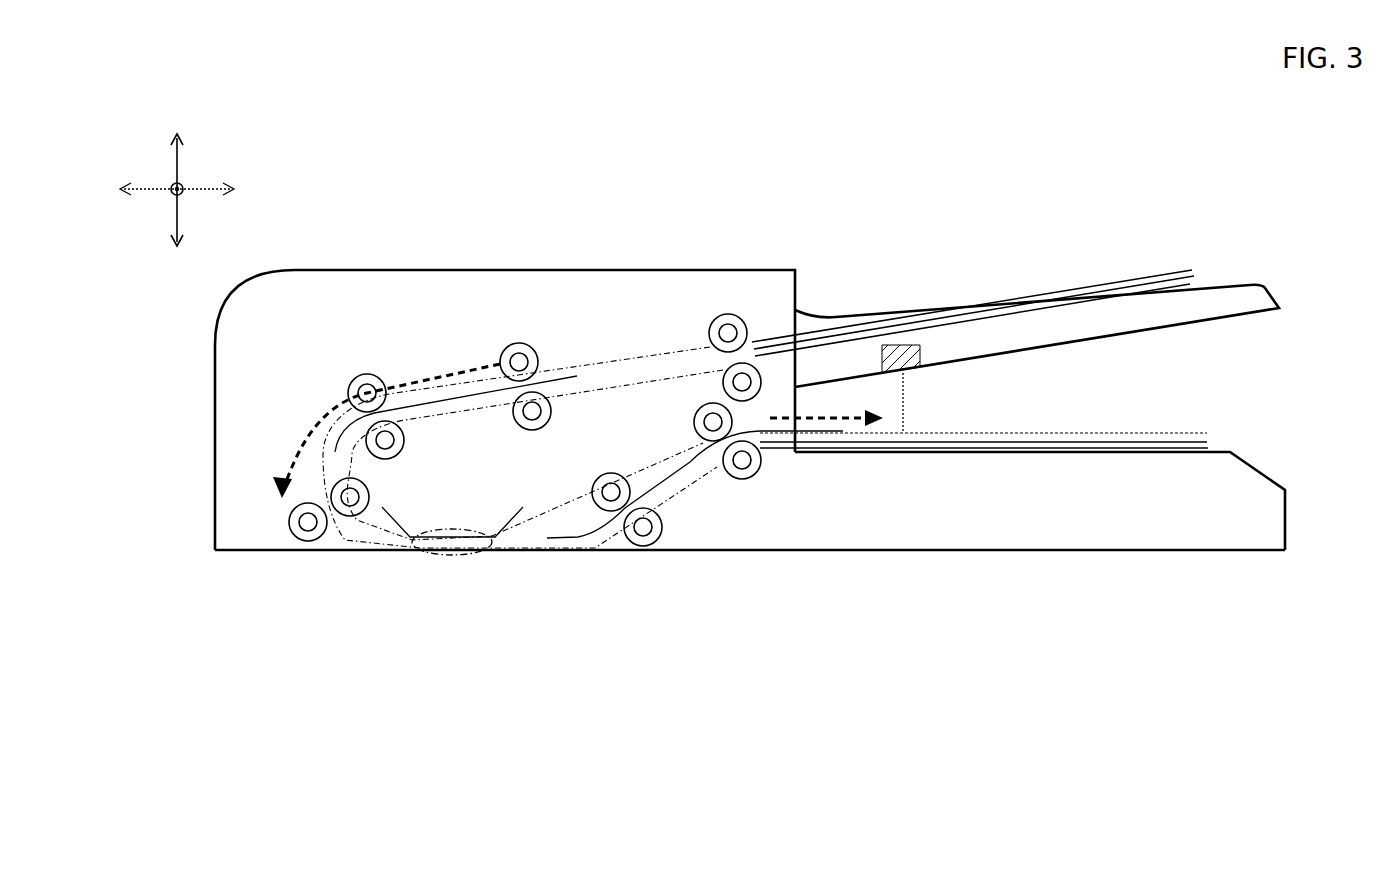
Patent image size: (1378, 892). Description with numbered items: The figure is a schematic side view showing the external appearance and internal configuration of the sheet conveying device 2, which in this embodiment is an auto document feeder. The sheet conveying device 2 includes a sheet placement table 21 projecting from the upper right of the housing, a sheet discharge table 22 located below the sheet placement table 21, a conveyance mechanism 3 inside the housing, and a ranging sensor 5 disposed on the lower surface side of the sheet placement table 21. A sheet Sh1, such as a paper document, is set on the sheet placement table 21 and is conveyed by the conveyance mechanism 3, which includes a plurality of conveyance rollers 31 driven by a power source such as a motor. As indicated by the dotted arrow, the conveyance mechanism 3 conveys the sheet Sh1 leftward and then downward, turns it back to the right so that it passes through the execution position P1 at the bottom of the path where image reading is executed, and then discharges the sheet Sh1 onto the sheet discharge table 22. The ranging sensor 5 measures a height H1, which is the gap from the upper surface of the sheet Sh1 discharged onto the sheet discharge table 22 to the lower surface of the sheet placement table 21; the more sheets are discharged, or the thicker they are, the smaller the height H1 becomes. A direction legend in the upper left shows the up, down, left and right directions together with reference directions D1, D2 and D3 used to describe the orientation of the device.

The sheet conveying device 2 is at (215, 355).
The conveyance mechanism 3 is at (488, 354).
The ranging sensor 5 is at (903, 345).
The sheet placement table 21 is at (1260, 287).
The sheet discharge table 22 is at (1214, 451).
The conveyance rollers 31 is at (367, 373).
The sheet Sh1 is at (1075, 287).
The execution position P1 is at (420, 552).
The height H1 is at (903, 400).
The direction D1 is at (172, 183).
The direction D2 is at (172, 198).
The direction D3 is at (213, 195).